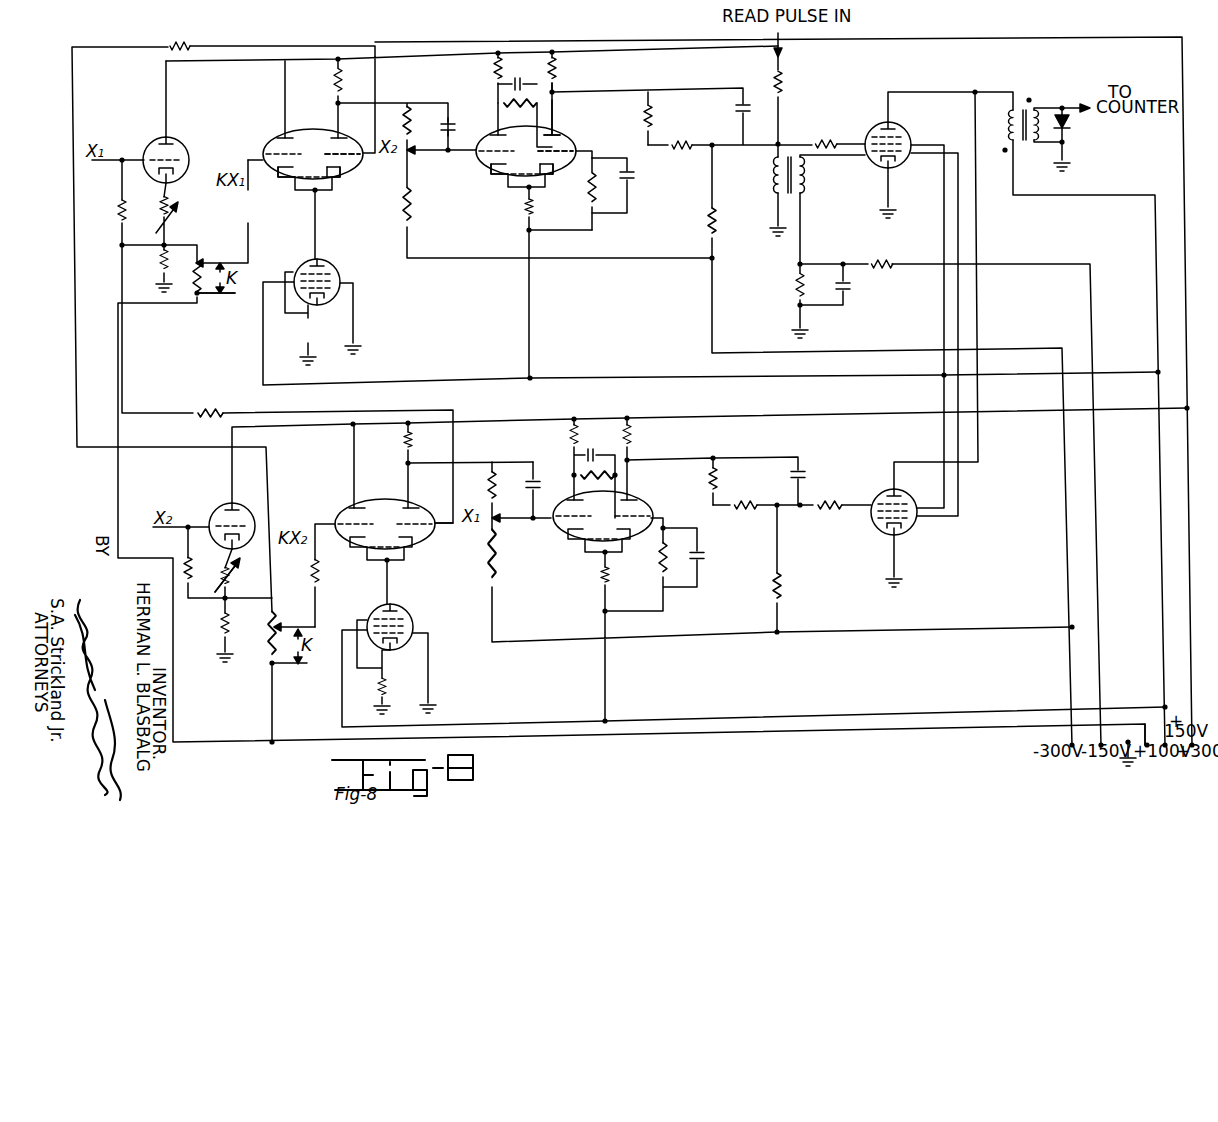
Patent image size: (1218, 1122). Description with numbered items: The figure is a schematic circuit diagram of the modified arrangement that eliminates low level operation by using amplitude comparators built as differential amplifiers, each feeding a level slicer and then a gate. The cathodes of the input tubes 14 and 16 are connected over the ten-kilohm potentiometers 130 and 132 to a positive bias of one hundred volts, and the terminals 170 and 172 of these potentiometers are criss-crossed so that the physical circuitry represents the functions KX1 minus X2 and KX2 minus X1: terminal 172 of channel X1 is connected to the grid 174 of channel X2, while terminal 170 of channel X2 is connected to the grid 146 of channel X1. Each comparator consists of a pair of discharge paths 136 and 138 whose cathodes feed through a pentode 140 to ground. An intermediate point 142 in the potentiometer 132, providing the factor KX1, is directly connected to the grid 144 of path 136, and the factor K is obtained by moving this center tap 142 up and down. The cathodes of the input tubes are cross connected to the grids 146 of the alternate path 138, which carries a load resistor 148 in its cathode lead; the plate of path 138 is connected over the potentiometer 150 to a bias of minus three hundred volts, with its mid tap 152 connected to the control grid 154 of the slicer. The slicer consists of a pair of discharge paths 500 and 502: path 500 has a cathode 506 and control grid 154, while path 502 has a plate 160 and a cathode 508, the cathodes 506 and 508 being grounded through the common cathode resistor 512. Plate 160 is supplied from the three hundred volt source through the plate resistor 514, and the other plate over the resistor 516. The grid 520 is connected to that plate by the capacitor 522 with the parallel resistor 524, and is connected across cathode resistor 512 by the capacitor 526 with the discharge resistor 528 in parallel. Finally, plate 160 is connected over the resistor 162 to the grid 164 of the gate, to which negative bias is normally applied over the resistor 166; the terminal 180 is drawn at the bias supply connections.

The tube 16 is at (180, 146).
The discharge path 136 is at (271, 144).
The load resistor 148 is at (336, 86).
The grid 146 is at (364, 158).
The discharge path 138 is at (343, 177).
The grid 144 is at (264, 183).
The pentode 140 is at (330, 266).
The terminal 172 is at (180, 245).
The potentiometer 132 is at (199, 261).
The intermediate point 142 is at (199, 298).
The mid tap 152 is at (414, 153).
The potentiometer 150 is at (412, 190).
The control grid 154 is at (486, 136).
The resistor 516 is at (494, 75).
The capacitor 522 is at (517, 84).
The plate resistor 514 is at (556, 66).
The parallel resistor 524 is at (520, 112).
The discharge path 500 is at (478, 173).
The plate 160 is at (563, 134).
The discharge path 502 is at (562, 136).
The grid 520 is at (578, 149).
The cathode 506 is at (494, 167).
The cathode 508 is at (553, 166).
The common cathode resistor 512 is at (526, 207).
The discharge resistor 528 is at (610, 194).
The capacitor 526 is at (633, 186).
The resistor 162 is at (658, 142).
The resistor 166 is at (715, 215).
The grid 164 is at (881, 128).
The tube 14 is at (221, 505).
The terminal 170 is at (240, 577).
The potentiometer 130 is at (274, 611).
The grid 174 is at (437, 527).
The +150V supply terminal 180 is at (1150, 742).